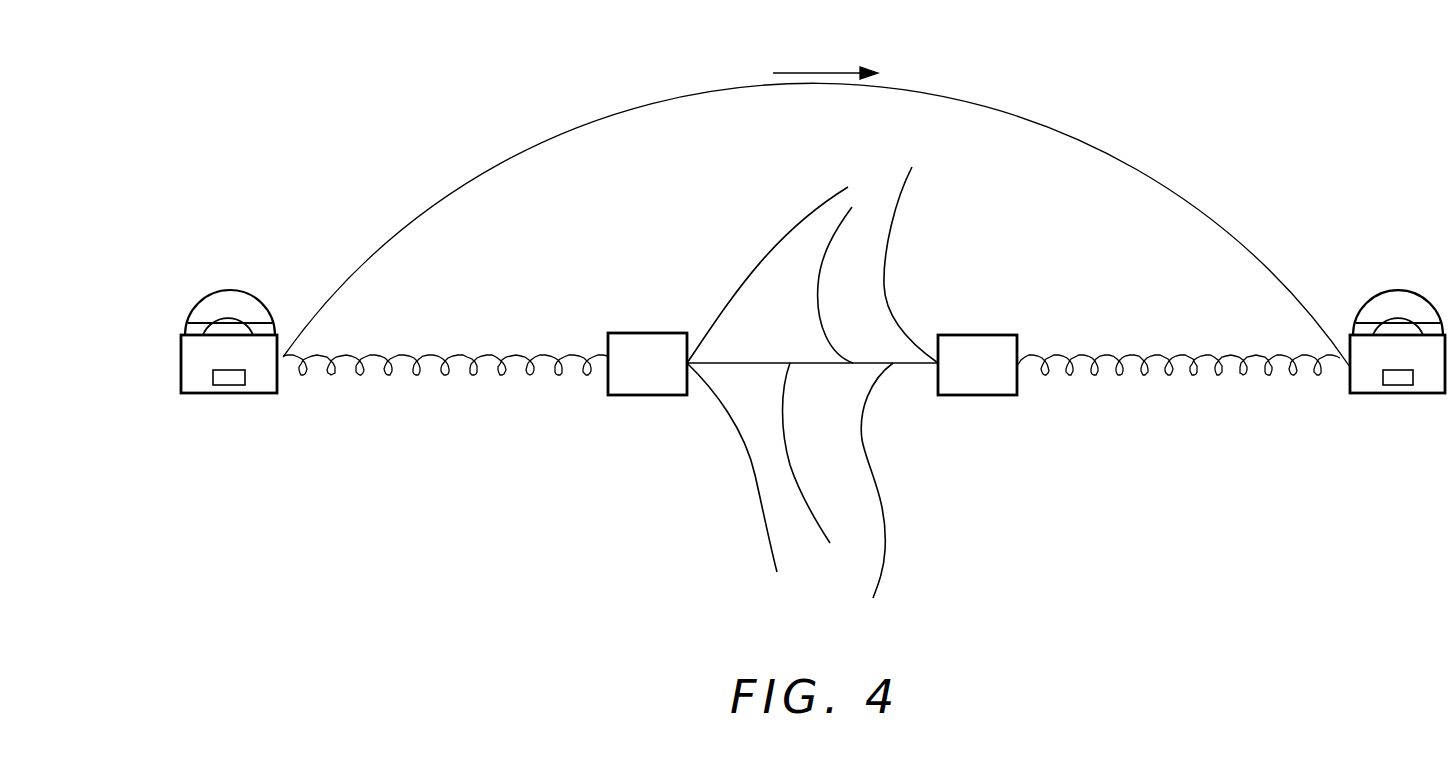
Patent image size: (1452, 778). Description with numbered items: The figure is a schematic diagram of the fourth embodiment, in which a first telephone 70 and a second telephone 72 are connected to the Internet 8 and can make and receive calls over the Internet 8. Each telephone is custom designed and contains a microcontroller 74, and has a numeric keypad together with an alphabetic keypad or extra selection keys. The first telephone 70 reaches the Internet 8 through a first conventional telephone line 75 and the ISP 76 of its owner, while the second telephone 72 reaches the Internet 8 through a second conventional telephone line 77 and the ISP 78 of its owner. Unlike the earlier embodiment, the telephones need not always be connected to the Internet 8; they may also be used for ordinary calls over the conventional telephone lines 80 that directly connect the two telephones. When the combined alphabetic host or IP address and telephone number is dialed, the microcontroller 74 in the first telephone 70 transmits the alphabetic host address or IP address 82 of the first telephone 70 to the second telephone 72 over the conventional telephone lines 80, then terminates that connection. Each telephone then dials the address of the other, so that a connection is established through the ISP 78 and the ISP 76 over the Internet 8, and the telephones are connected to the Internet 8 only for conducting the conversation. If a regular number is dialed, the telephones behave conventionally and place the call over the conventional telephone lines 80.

The Internet 8 is at (908, 284).
The first telephone 70 is at (258, 395).
The second telephone 72 is at (1360, 395).
The microcontroller 74 is at (218, 384).
The first conventional telephone line 75 is at (493, 354).
The ISP of the owner of the first telephone 76 is at (640, 396).
The second conventional telephone line 77 is at (1157, 354).
The ISP of the owner of the second telephone 78 is at (980, 396).
The conventional telephone lines 80 is at (653, 105).
The alphabetic host address or IP address 82 is at (797, 70).